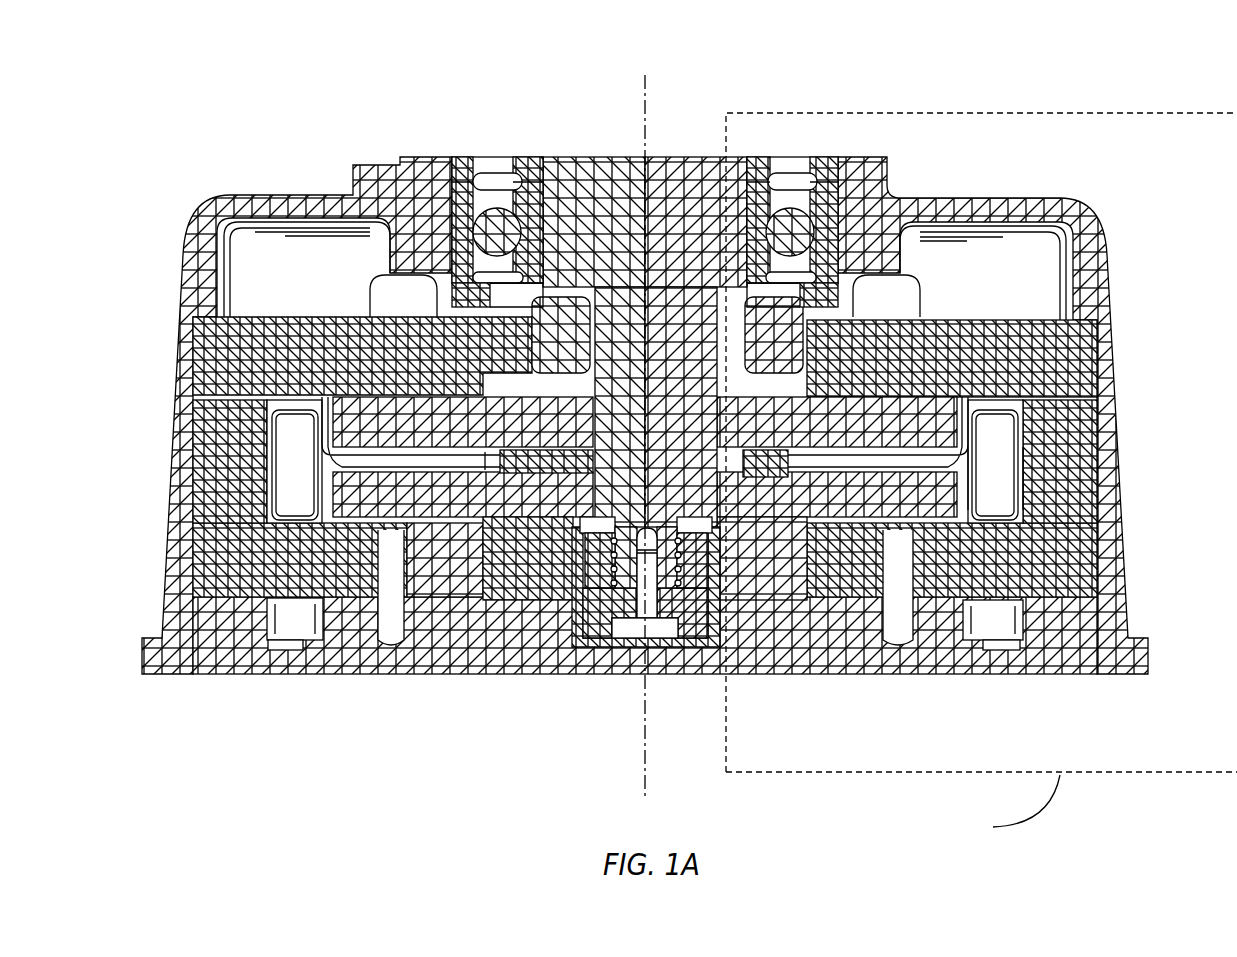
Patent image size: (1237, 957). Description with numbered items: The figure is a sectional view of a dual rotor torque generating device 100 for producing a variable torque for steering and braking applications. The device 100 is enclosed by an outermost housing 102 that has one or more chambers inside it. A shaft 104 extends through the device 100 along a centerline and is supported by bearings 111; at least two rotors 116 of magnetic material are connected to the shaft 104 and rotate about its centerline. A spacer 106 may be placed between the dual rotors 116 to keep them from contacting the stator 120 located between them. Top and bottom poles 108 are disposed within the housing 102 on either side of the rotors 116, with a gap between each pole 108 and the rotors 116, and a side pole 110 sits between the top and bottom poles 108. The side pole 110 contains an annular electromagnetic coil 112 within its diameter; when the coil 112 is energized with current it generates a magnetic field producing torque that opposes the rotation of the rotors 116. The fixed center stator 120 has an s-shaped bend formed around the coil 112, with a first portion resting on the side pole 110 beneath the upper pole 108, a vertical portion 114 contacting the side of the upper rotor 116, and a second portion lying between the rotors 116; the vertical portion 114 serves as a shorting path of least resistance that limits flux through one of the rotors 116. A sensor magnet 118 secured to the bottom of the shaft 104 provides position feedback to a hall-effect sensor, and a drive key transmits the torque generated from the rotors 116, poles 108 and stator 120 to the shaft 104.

The dual rotor torque generating device 100 is at (195, 150).
The housing 102 is at (183, 318).
The shaft 104 is at (662, 505).
The spacer 106 is at (552, 463).
The top and bottom poles 108 is at (253, 367).
The side pole 110 is at (220, 490).
The bearings 111 is at (480, 220).
The electromagnetic coil 112 is at (997, 440).
The vertical portion 114 is at (330, 433).
The rotors 116 is at (820, 443).
The sensor magnet 118 is at (638, 628).
The stator 120 is at (955, 468).